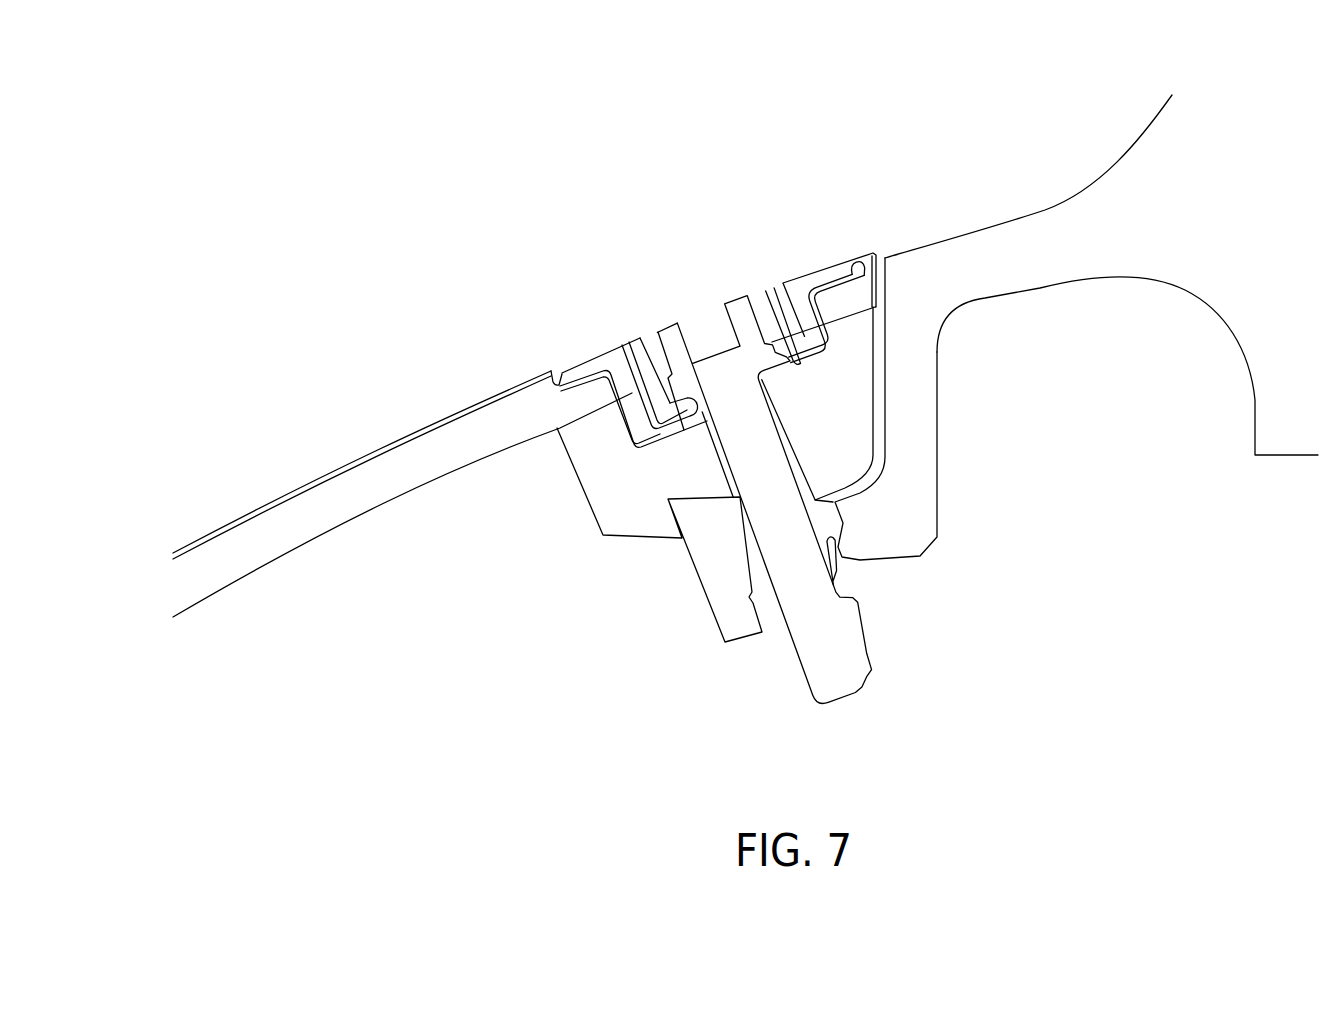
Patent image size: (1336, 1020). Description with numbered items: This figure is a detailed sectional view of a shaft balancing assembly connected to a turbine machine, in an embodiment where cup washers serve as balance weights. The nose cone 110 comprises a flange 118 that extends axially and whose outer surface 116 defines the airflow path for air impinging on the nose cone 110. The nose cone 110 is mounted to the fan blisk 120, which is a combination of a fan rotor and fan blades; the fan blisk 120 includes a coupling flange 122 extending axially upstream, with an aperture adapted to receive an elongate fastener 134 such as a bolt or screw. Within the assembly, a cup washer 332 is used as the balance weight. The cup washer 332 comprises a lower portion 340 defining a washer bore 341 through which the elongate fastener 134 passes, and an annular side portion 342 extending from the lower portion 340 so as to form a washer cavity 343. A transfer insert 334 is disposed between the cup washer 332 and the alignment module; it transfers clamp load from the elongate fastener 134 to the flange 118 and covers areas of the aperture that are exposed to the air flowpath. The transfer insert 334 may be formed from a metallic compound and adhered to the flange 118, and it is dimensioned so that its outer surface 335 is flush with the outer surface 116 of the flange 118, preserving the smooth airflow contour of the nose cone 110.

The nose cone 110 is at (365, 383).
The outer surface 116 is at (322, 486).
The flange 118 is at (265, 530).
The fan blisk 120 is at (1268, 427).
The coupling flange 122 is at (920, 533).
The elongate fastener 134 is at (862, 705).
The cup washer 332 is at (778, 290).
The transfer insert 334 is at (590, 362).
The outer surface 335 is at (838, 262).
The lower portion 340 is at (677, 412).
The washer bore 341 is at (778, 380).
The annular side portion 342 is at (637, 349).
The washer cavity 343 is at (752, 300).